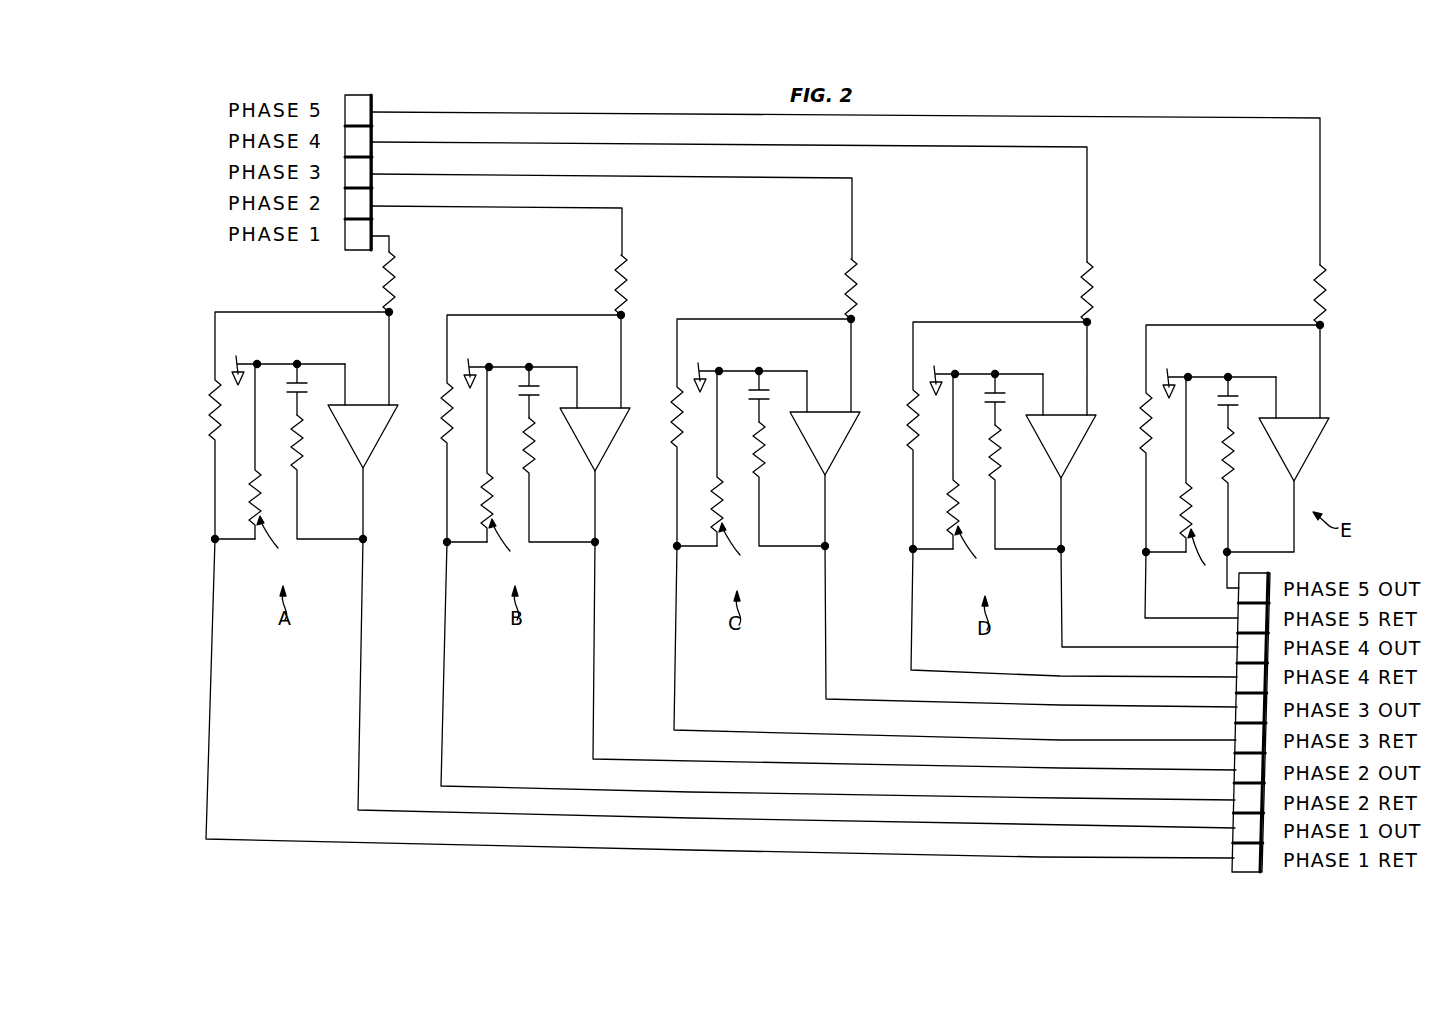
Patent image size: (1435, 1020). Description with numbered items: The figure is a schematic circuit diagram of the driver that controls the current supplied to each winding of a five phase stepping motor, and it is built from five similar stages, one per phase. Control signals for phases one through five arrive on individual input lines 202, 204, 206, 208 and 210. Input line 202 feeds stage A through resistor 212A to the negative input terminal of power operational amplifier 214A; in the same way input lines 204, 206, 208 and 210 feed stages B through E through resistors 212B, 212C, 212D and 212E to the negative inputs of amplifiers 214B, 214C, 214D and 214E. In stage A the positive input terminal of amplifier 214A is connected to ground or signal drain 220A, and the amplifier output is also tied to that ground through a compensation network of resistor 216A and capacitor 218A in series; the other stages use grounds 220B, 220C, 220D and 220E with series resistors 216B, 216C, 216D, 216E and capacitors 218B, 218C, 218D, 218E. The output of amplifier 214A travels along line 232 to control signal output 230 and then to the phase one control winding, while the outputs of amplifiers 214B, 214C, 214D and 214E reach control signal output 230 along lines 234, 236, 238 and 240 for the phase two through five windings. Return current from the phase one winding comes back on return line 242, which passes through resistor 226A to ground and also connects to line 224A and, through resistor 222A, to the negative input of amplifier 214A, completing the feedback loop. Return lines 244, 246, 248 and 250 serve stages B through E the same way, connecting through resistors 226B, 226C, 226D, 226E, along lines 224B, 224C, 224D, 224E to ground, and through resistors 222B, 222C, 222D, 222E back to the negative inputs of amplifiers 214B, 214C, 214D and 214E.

The input line 202 is at (376, 243).
The input line 204 is at (552, 208).
The input line 206 is at (732, 178).
The input line 208 is at (960, 147).
The input line 210 is at (1210, 120).
The resistor 212A is at (425, 284).
The resistor 212B is at (652, 287).
The resistor 212C is at (815, 290).
The resistor 212D is at (1038, 293).
The resistor 212E is at (1277, 294).
The power operational amplifier 214A is at (379, 427).
The power operational amplifier 214B is at (612, 430).
The power operational amplifier 214C is at (842, 434).
The power operational amplifier 214D is at (1081, 437).
The power operational amplifier 214E is at (1295, 438).
The resistor 216A is at (327, 477).
The resistor 216B is at (559, 480).
The resistor 216C is at (789, 484).
The resistor 216D is at (1025, 487).
The resistor 216E is at (1257, 492).
The capacitor 218A is at (328, 373).
The capacitor 218B is at (558, 377).
The capacitor 218C is at (787, 380).
The capacitor 218D is at (1023, 382).
The capacitor 218E is at (1259, 384).
The ground 220A is at (286, 361).
The ground 220B is at (520, 364).
The ground 220C is at (748, 367).
The ground 220D is at (984, 370).
The ground 220E is at (1219, 372).
The resistor 222A is at (297, 415).
The resistor 222B is at (508, 430).
The resistor 222C is at (741, 434).
The resistor 222D is at (974, 437).
The resistor 222E is at (1209, 440).
The line 224A is at (241, 570).
The line 224B is at (473, 574).
The line 224C is at (703, 580).
The line 224D is at (939, 584).
The line 224E is at (1134, 571).
The resistor 226A is at (276, 469).
The resistor 226B is at (512, 472).
The resistor 226C is at (744, 476).
The resistor 226D is at (978, 481).
The resistor 226E is at (1186, 484).
The control signal output 230 is at (1358, 562).
The line 232 is at (672, 820).
The line 234 is at (935, 767).
The line 236 is at (903, 699).
The line 238 is at (1135, 647).
The line 240 is at (1232, 580).
The return line 242 is at (600, 848).
The return line 244 is at (800, 795).
The return line 246 is at (770, 729).
The return line 248 is at (1055, 677).
The return line 250 is at (1205, 616).